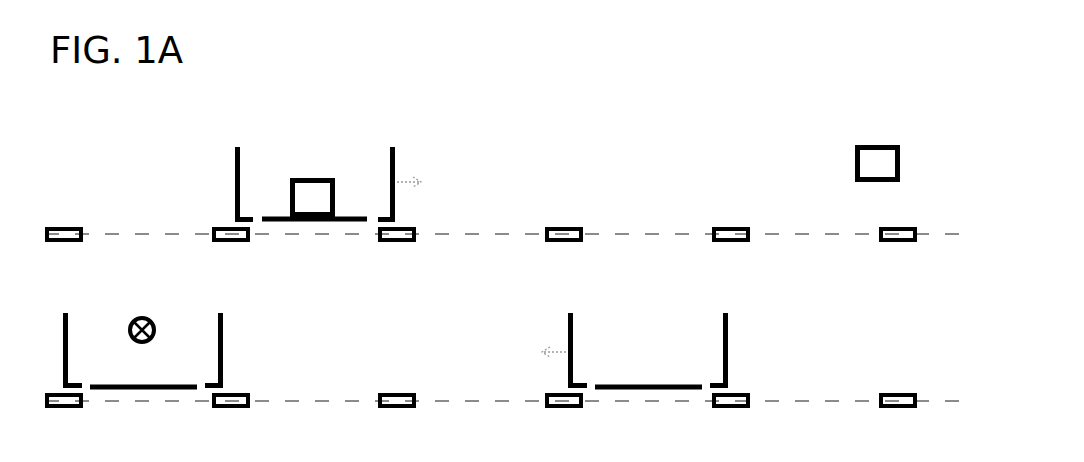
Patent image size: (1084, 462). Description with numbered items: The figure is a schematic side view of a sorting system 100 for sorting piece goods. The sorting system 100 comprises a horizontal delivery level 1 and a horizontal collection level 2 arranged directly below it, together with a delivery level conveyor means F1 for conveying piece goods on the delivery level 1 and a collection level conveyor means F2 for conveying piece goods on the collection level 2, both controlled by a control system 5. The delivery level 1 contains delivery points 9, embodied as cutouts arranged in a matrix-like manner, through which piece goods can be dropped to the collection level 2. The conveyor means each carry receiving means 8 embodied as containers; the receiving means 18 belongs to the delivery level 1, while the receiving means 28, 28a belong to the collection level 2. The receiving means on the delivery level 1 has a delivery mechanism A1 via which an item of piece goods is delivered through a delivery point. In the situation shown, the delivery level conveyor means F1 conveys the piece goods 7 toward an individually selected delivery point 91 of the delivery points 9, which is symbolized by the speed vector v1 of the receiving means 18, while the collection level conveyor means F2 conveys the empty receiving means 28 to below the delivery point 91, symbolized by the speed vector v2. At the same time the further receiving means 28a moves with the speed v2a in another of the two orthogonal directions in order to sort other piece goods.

The sorting system 100 is at (793, 104).
The delivery level 1 is at (790, 235).
The collection level 2 is at (792, 402).
The control system 5 is at (885, 145).
The piece goods 7 is at (320, 178).
The receiving means 8 is at (356, 246).
The receiving means of the delivery level 18 is at (224, 160).
The receiving means of the collection level 28 is at (558, 327).
The receiving means of the collection level 28a is at (227, 357).
The delivery points 9 is at (130, 216).
The delivery point 91 is at (485, 187).
The delivery mechanism A1 is at (353, 217).
The delivery level conveyor means F1 is at (394, 150).
The collection level conveyor means F2 is at (224, 320).
The speed vector v1 is at (398, 180).
The speed vector v2 is at (550, 348).
The speed vector v2a is at (138, 320).